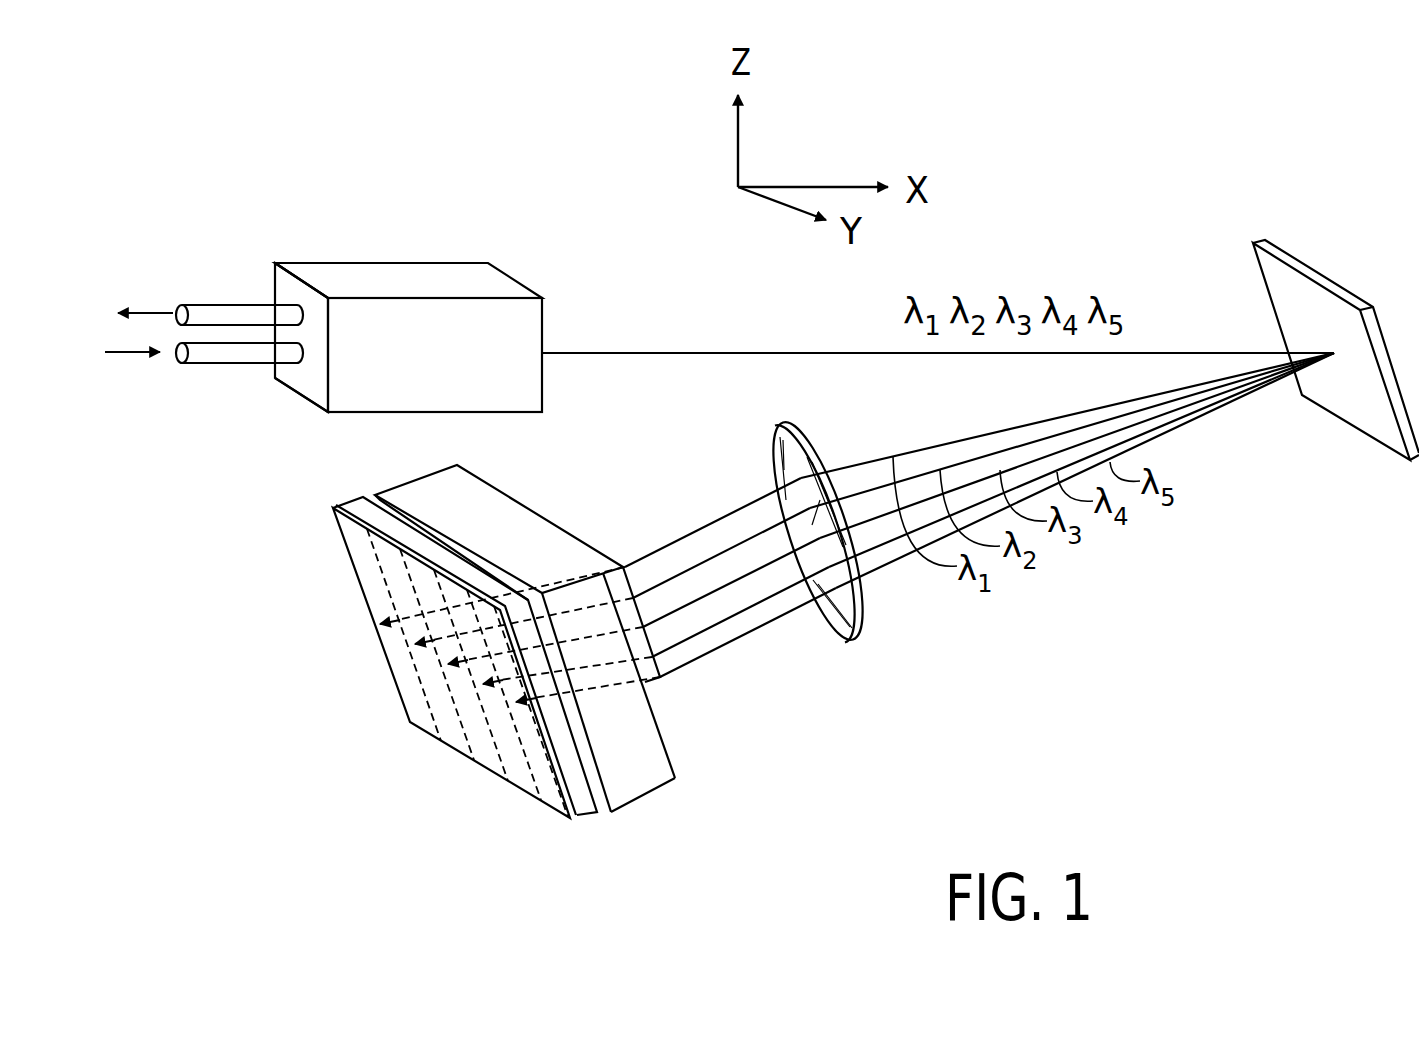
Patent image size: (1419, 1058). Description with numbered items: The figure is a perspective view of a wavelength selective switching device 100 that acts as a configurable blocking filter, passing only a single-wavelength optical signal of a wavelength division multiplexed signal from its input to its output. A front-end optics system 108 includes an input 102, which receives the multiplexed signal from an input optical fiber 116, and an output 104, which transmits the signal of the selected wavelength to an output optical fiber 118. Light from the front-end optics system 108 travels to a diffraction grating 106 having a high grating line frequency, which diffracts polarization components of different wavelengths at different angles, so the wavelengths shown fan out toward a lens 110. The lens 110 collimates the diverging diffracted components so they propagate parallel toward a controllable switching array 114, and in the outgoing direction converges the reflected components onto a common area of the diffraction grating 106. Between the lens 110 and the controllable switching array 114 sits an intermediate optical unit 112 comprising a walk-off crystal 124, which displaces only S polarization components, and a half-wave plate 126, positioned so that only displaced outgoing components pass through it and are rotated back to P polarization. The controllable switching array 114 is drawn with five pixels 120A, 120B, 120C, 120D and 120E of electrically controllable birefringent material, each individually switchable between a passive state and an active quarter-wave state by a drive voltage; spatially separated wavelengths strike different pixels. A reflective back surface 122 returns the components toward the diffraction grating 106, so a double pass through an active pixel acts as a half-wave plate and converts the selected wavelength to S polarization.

The wavelength selective switching device 100 is at (1205, 100).
The input 102 is at (313, 372).
The output 104 is at (315, 306).
The diffraction grating 106 is at (1302, 262).
The front-end optics system 108 is at (440, 266).
The lens 110 is at (838, 642).
The intermediate optical unit 112 is at (697, 787).
The controllable switching array 114 is at (573, 822).
The input optical fiber 116 is at (221, 368).
The output optical fiber 118 is at (223, 302).
The pixel 120A is at (413, 720).
The pixel 120B is at (452, 743).
The pixel 120C is at (485, 758).
The pixel 120D is at (517, 783).
The pixel 120E is at (548, 807).
The back surface 122 is at (333, 508).
The walk-off crystal 124 is at (403, 482).
The half-wave plate 126 is at (490, 485).